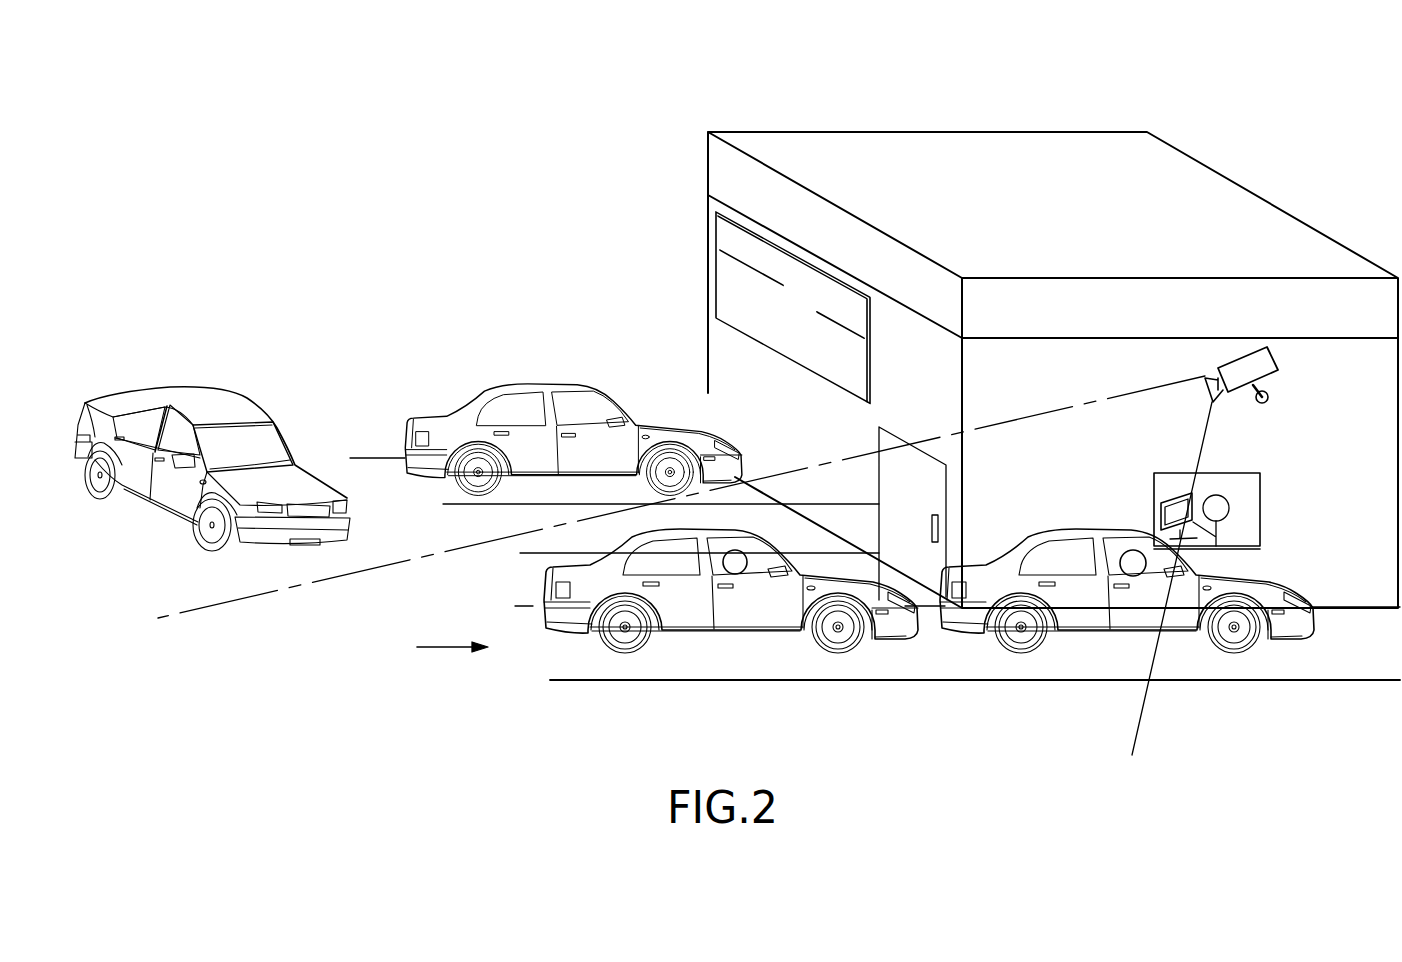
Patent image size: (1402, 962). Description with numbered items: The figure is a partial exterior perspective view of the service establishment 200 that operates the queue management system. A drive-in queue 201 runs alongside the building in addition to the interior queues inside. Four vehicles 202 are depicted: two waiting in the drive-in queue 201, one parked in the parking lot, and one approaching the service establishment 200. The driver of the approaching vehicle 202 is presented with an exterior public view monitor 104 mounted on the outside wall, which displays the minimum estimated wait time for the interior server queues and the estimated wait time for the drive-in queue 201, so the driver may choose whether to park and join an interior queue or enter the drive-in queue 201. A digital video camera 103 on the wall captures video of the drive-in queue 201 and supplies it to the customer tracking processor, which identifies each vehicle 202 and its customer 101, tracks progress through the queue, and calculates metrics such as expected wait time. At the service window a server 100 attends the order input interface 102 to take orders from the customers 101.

The server 100 is at (1229, 507).
The customer 101 is at (746, 556).
The order input interface 102 is at (1180, 493).
The digital video camera 103 is at (1272, 360).
The public view monitor 104 is at (708, 221).
The service establishment 200 is at (1012, 152).
The drive-in queue 201 is at (584, 664).
The vehicle 202 is at (157, 507).